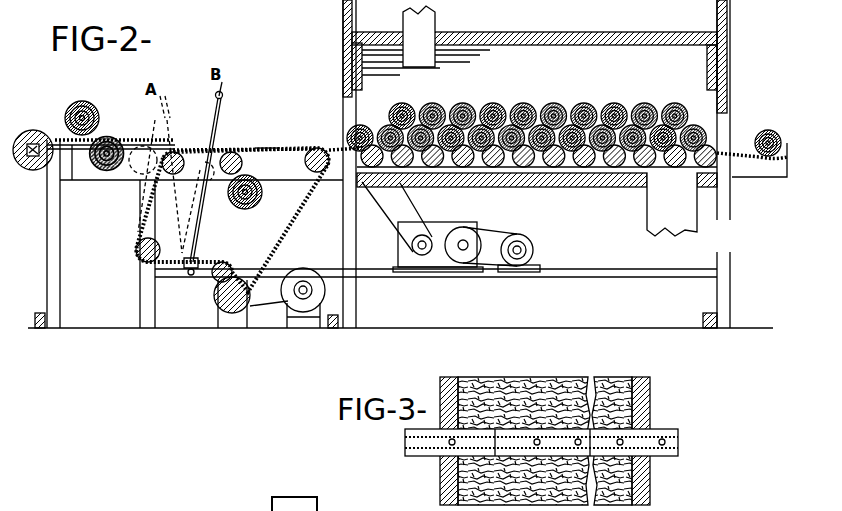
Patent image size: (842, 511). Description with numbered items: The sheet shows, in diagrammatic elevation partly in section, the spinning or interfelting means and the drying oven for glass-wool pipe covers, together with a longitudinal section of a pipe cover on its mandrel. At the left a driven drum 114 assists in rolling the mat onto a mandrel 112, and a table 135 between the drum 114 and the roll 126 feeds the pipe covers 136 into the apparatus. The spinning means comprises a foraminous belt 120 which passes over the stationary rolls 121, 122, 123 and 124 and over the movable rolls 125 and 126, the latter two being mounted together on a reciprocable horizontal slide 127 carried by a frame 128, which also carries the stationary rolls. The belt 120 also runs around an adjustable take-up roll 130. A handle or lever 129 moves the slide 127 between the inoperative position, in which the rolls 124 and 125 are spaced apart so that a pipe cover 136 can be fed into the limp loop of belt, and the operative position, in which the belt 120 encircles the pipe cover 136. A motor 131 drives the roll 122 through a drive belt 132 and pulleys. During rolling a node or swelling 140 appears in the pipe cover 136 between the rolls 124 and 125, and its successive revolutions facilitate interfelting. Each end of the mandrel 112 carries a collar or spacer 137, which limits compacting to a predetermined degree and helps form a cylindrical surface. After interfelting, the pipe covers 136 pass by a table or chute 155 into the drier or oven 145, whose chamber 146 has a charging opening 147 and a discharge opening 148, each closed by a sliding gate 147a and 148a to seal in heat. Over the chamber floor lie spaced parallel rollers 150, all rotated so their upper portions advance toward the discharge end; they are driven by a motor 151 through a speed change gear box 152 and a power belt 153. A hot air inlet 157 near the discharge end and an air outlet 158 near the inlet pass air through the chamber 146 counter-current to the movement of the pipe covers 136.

In FIG. 3, the mandrel 112 is at (430, 458).
In FIG. 2, the driven drum 114 is at (30, 170).
In FIG. 2, the foraminous belt 120 is at (140, 243).
In FIG. 2, the stationary roll 121 is at (137, 257).
In FIG. 2, the stationary roll 122 is at (214, 298).
In FIG. 2, the stationary roll 123 is at (310, 172).
In FIG. 2, the stationary roll 124 is at (297, 148).
In FIG. 2, the movable roll 125 is at (236, 152).
In FIG. 2, the movable roll 126 is at (178, 152).
In FIG. 2, the reciprocable horizontal slide 127 is at (240, 206).
In FIG. 2, the frame 128 is at (140, 302).
In FIG. 2, the handle or lever 129 is at (215, 98).
In FIG. 2, the take-up roll 130 is at (226, 262).
In FIG. 2, the motor 131 is at (301, 322).
In FIG. 2, the drive belt 132 is at (262, 312).
In FIG. 2, the table 135 is at (141, 140).
In FIG. 2, the pipe cover 136 is at (66, 112).
In FIG. 3, the pipe cover 136 is at (530, 380).
In FIG. 3, the collar or spacer 137 is at (447, 380).
In FIG. 2, the node or swelling 140 is at (268, 148).
In FIG. 2, the drier or oven 145 is at (582, 32).
In FIG. 2, the chamber 146 is at (600, 70).
In FIG. 2, the charging opening 147 is at (360, 97).
In FIG. 2, the sliding gate 147a is at (343, 43).
In FIG. 2, the discharge opening 148 is at (718, 118).
In FIG. 2, the sliding gate 148a is at (728, 45).
In FIG. 2, the rollers 150 is at (548, 165).
In FIG. 2, the motor 151 is at (534, 248).
In FIG. 2, the speed change gear box 152 is at (440, 272).
In FIG. 2, the power belt 153 is at (384, 223).
In FIG. 2, the table or chute 155 is at (344, 148).
In FIG. 2, the hot air inlet 157 is at (647, 220).
In FIG. 2, the air outlet 158 is at (436, 17).